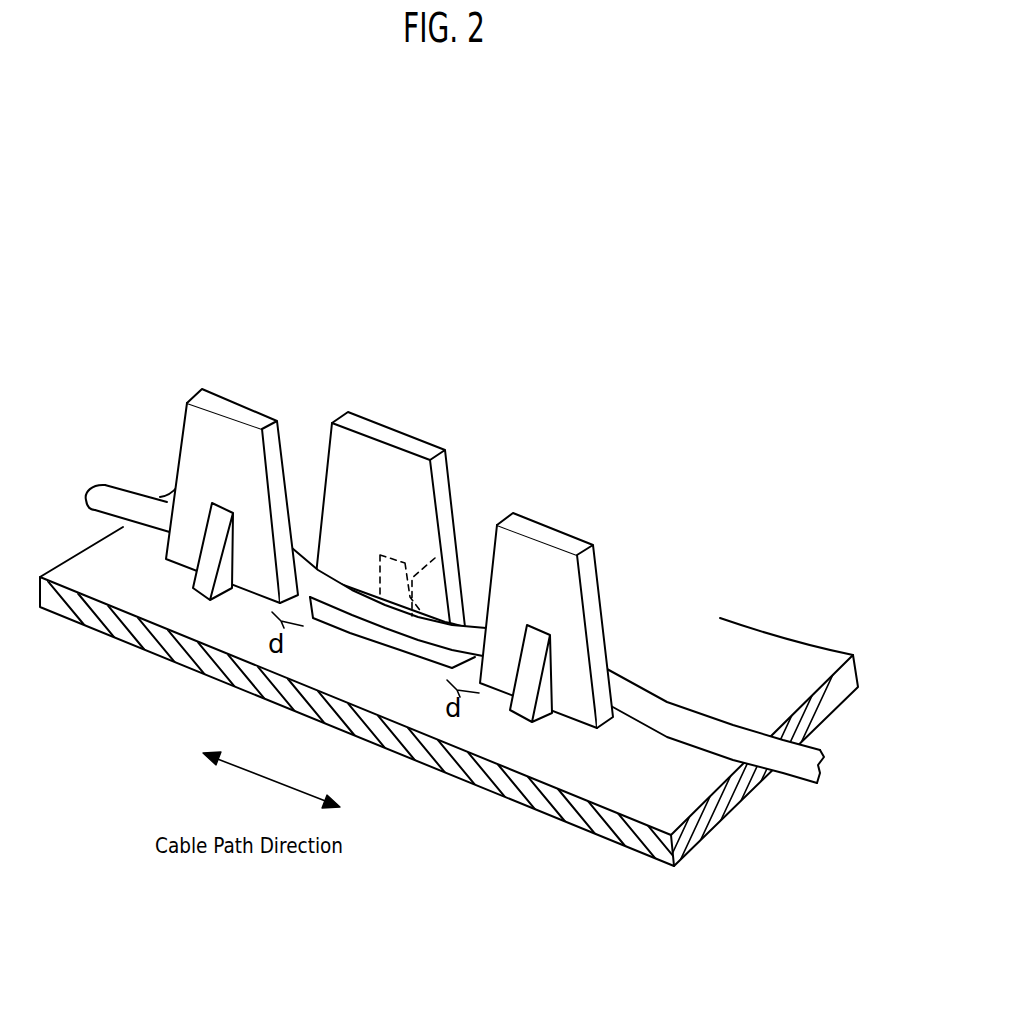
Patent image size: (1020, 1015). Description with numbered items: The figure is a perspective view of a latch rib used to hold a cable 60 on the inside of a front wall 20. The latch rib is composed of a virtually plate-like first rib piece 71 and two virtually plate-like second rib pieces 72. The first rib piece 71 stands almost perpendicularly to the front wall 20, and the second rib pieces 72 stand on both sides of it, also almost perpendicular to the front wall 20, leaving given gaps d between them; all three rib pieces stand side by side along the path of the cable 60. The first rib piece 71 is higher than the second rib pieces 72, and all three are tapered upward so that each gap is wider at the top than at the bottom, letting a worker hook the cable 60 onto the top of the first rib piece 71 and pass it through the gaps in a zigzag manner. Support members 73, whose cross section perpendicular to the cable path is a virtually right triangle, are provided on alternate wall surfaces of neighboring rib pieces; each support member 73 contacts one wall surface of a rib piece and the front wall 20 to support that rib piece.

The front wall 20 is at (737, 648).
The cable 60 is at (112, 492).
The first rib piece 71 is at (382, 428).
The second rib piece 72 is at (234, 402).
The support member 73 is at (435, 558).